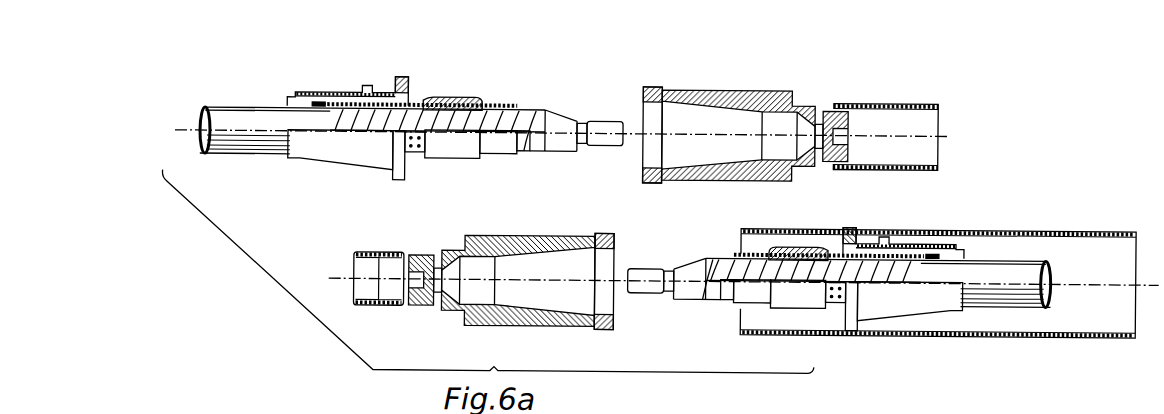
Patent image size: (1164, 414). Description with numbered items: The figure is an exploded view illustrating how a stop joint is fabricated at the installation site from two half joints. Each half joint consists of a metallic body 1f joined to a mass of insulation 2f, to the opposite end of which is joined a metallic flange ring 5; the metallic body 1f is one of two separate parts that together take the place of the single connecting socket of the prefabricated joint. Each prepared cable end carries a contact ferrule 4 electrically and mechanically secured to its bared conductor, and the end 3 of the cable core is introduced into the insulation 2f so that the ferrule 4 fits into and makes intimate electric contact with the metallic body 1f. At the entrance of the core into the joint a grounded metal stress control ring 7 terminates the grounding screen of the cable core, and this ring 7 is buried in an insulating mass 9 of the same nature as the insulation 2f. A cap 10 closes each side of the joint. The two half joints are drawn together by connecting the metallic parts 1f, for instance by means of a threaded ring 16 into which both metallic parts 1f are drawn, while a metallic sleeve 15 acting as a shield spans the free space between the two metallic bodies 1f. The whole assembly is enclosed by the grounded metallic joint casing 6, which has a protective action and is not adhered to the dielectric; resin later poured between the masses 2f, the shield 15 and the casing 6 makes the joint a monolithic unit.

The cable core end 3 is at (508, 118).
The contact ferrule 4 is at (597, 118).
The metallic flange ring 5 is at (653, 84).
The joint casing 6 is at (981, 223).
The stress control ring 7 is at (436, 94).
The insulating mass 9 is at (462, 100).
The cap 10 is at (335, 156).
The metallic sleeve 15 is at (876, 98).
The threaded ring 16 is at (375, 249).
The metallic body 1f is at (815, 104).
The insulation mass 2f is at (728, 88).